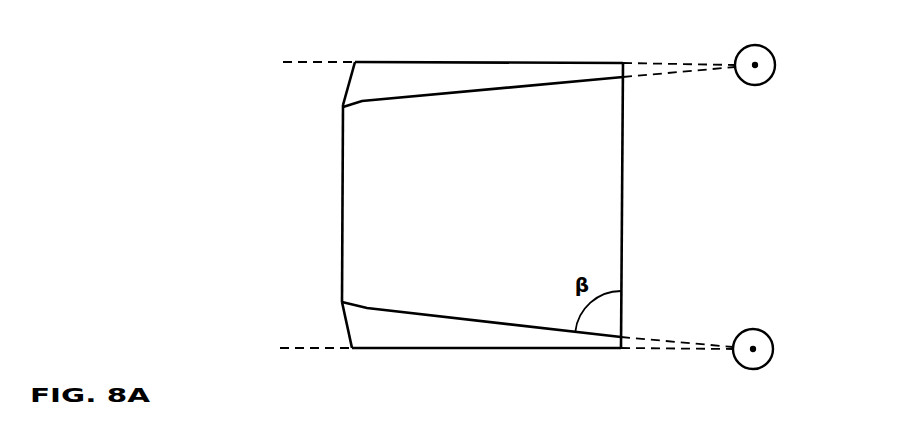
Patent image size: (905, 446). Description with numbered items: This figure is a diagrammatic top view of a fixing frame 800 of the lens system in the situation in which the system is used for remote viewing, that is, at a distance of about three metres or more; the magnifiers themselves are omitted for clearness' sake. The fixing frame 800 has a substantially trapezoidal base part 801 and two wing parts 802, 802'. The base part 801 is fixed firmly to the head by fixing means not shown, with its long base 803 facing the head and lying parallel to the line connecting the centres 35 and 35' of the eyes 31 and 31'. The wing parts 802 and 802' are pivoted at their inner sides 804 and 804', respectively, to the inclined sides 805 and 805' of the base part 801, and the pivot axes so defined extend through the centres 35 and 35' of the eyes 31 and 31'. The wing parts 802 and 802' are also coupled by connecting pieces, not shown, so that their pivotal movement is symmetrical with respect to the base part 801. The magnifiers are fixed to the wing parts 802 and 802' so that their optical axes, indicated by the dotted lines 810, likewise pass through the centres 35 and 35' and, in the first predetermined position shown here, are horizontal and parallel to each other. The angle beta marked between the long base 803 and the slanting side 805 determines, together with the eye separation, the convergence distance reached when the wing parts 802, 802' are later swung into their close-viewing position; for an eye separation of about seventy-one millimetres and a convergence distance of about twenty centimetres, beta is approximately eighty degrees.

The fixing frame 800 is at (285, 150).
The base part 801 is at (457, 190).
The wing part 802 is at (486, 369).
The wing part 802' is at (488, 45).
The long base 803 is at (618, 205).
The inner side 804 is at (481, 300).
The inner side 804' is at (483, 107).
The inclined side 805 is at (318, 325).
The inclined side 805' is at (314, 83).
The dotted lines 810 is at (657, 62).
The eye 31 is at (783, 327).
The eye 31' is at (785, 72).
The centre of the eye 35 is at (792, 367).
The centre of the eye 35' is at (794, 39).